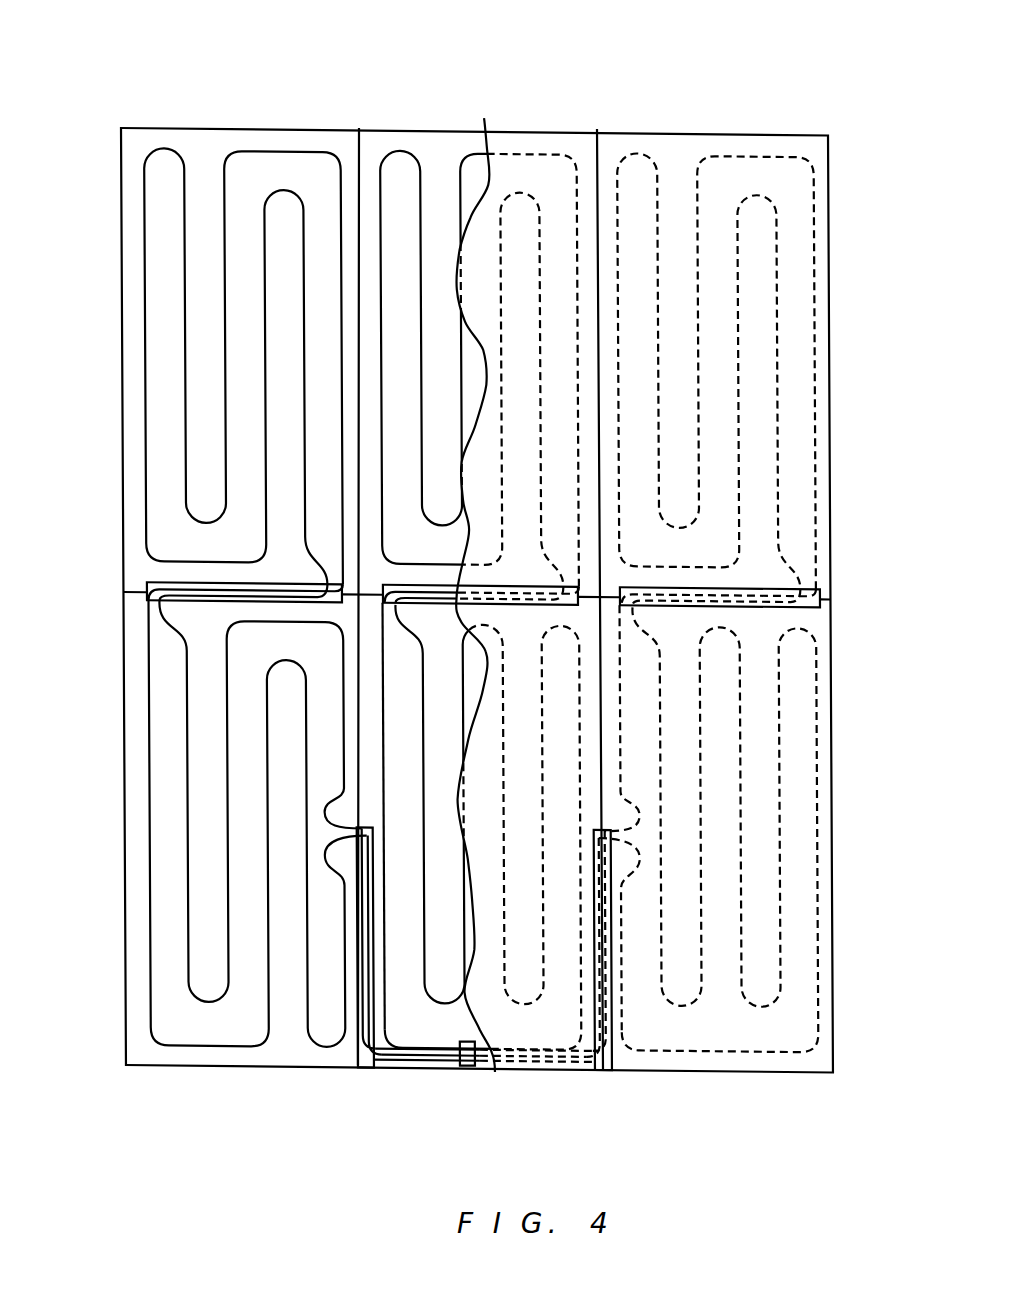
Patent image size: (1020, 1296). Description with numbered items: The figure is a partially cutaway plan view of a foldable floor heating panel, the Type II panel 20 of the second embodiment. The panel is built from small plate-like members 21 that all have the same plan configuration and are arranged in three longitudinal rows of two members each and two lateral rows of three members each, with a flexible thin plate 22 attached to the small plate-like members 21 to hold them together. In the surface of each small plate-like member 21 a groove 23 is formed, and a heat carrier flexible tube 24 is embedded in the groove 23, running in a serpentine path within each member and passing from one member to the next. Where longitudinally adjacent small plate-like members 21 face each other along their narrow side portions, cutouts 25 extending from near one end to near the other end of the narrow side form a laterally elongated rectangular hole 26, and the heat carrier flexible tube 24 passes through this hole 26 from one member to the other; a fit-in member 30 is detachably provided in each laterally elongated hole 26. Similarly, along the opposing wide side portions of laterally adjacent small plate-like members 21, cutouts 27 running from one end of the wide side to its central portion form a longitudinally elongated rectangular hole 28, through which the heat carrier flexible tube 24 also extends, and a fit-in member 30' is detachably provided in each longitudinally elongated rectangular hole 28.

The Type II panel 20 is at (460, 111).
The small plate-like member 21 is at (137, 622).
The flexible thin plate 22 is at (798, 722).
The groove 23 is at (290, 150).
The heat carrier flexible tube 24 is at (147, 203).
The cutout 25 is at (158, 580).
The laterally elongated rectangular hole 26 is at (147, 627).
The cutout 27 is at (380, 1068).
The longitudinally elongated rectangular hole 28 is at (363, 1068).
The fit-in member 30 is at (752, 559).
The fit-in member 30' is at (627, 992).